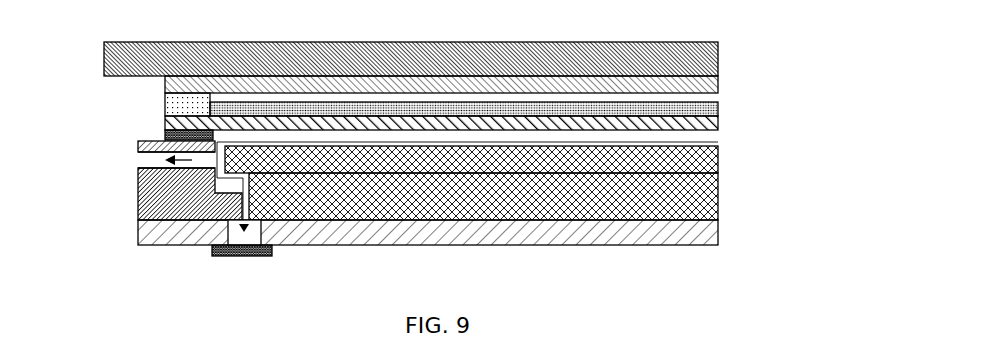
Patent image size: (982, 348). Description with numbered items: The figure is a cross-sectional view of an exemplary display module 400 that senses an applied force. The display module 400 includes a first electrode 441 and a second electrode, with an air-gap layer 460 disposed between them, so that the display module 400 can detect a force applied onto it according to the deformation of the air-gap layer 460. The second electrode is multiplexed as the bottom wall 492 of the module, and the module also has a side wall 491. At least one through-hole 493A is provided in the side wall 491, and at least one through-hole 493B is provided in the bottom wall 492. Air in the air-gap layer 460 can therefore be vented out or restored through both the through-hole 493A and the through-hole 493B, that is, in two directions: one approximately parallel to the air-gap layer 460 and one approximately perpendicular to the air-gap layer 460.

The display module 400 is at (439, 152).
The first electrode 441 is at (707, 108).
The air-gap layer 460 is at (707, 137).
The side wall 491 is at (137, 204).
The bottom wall 492 is at (523, 238).
The through-hole 493A is at (153, 161).
The through-hole 493B is at (218, 258).